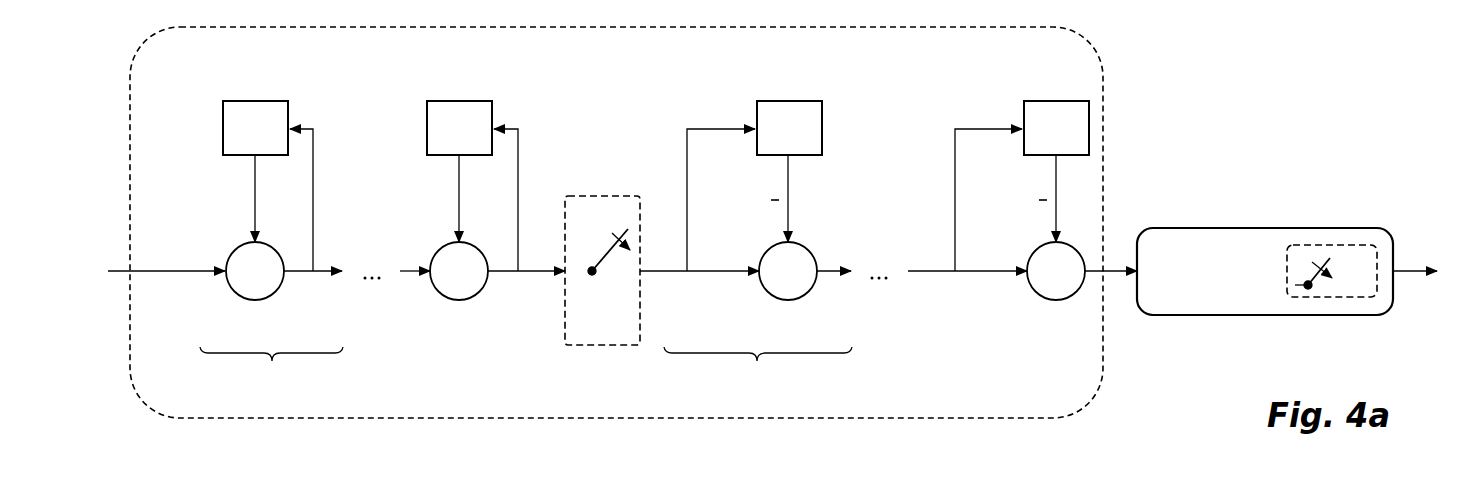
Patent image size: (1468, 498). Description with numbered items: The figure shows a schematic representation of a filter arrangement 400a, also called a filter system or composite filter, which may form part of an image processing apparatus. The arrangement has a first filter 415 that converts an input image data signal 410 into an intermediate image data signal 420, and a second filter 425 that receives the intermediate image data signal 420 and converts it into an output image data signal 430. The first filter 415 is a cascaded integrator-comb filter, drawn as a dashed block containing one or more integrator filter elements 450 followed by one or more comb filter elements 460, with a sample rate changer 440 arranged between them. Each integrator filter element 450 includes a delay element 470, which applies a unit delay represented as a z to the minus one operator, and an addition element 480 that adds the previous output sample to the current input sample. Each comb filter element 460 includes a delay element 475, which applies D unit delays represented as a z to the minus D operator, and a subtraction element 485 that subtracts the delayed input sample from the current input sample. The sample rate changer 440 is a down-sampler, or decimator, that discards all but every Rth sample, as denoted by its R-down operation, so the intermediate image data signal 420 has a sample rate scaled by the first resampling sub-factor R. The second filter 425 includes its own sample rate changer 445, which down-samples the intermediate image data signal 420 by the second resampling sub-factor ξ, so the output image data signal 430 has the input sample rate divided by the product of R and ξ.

The filter arrangement 400a is at (1370, 92).
The input image data signal 410 is at (131, 270).
The first filter 415 is at (207, 83).
The intermediate image data signal 420 is at (1112, 273).
The second filter 425 is at (1198, 287).
The output image data signal 430 is at (1410, 268).
The sample rate changer 440 is at (604, 196).
The sample rate changer 445 is at (1330, 245).
The integrator filter element 450 is at (271, 228).
The comb filter element 460 is at (766, 228).
The delay element 470 is at (260, 101).
The delay element 475 is at (790, 101).
The addition element 480 is at (278, 293).
The subtraction element 485 is at (810, 250).